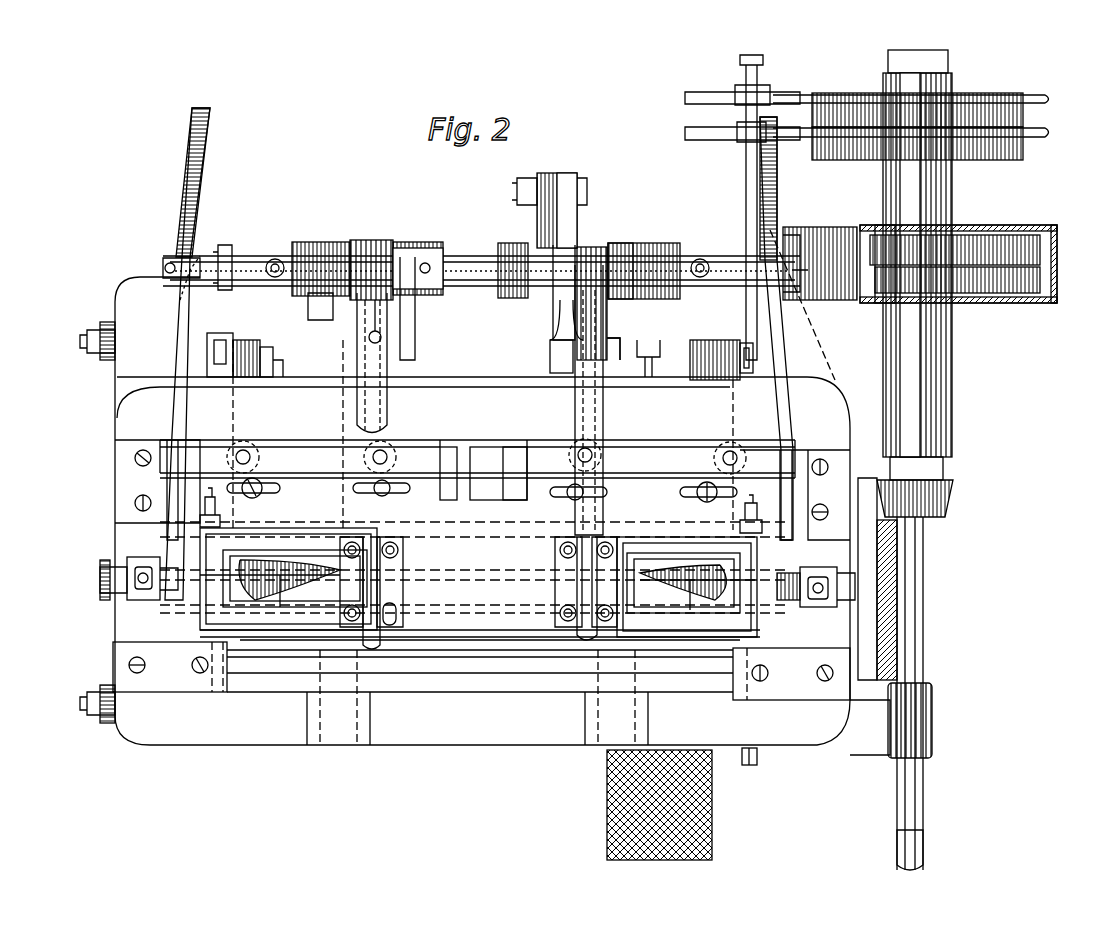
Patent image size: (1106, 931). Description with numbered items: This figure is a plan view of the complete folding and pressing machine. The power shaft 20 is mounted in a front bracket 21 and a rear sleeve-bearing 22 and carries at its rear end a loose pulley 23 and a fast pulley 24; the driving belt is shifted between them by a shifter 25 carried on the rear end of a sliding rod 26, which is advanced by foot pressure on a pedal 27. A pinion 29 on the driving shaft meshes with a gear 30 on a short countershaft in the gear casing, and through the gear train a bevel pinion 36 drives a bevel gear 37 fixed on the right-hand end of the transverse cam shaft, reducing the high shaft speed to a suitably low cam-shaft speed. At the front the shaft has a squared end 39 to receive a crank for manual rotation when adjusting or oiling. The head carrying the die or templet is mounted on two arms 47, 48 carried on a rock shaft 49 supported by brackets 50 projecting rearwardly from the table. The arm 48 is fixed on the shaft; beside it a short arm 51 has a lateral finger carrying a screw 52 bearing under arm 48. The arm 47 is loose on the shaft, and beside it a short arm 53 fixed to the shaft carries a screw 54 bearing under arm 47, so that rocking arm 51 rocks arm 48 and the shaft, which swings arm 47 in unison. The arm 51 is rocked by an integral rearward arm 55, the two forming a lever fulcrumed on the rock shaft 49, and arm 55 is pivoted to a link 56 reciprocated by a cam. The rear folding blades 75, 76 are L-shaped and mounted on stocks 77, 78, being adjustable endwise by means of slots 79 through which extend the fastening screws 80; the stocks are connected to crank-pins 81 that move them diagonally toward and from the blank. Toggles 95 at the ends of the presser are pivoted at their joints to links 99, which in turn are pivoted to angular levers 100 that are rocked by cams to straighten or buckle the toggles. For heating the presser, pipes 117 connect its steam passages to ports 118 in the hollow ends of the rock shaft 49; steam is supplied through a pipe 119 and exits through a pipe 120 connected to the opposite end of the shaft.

The power shaft 20 is at (925, 590).
The front bracket 21 is at (933, 720).
The rear sleeve-bearing 22 is at (952, 208).
The loose pulley 23 is at (960, 105).
The fast pulley 24 is at (1005, 160).
The shifter 25 is at (1050, 102).
The sliding rod 26 is at (758, 760).
The pedal 27 is at (712, 805).
The pinion 29 is at (880, 232).
The gear 30 is at (1025, 235).
The bevel pinion 36 is at (950, 500).
The bevel gear 37 is at (895, 660).
The squared end 39 is at (925, 840).
The arm 47 is at (388, 415).
The arm 48 is at (603, 405).
The rock shaft 49 is at (470, 258).
The brackets 50 is at (315, 242).
The short arm 51 is at (553, 318).
The screw 52 is at (607, 300).
The short arm 53 is at (416, 318).
The screw 54 is at (370, 337).
The arm 55 is at (535, 195).
The link 56 is at (578, 210).
The rear folding blade 75 is at (665, 487).
The rear folding blade 76 is at (285, 480).
The stock 77 is at (690, 455).
The stock 78 is at (328, 445).
The slots 79 is at (283, 490).
The fastening screws 80 is at (345, 492).
The crank-pins 81 is at (245, 450).
The toggles 95 is at (140, 592).
The links 99 is at (167, 540).
The angular levers 100 is at (212, 150).
The pipes 117 is at (205, 500).
The ports 118 is at (270, 262).
The pipe 119 is at (165, 265).
The pipe 120 is at (800, 275).